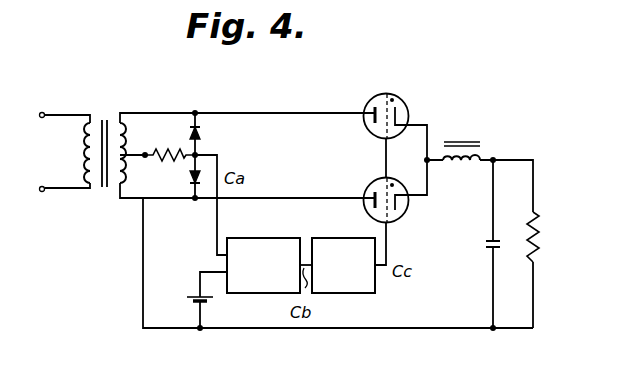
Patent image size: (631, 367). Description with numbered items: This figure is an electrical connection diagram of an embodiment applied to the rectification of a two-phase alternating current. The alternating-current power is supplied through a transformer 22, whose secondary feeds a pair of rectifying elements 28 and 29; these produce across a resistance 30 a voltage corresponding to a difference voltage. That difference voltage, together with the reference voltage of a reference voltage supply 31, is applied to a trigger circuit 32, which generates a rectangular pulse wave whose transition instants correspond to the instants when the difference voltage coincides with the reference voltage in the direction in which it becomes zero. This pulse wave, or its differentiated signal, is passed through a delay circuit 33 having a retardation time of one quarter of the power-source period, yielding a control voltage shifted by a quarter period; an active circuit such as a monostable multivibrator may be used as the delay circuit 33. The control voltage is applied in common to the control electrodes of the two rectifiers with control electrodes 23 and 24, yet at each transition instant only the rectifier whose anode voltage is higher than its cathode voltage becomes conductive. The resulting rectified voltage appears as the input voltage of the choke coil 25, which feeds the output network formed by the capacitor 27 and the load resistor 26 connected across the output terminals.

The transformer 22 is at (103, 120).
The rectifier with control electrode 23 is at (367, 102).
The rectifier with control electrode 24 is at (398, 218).
The choke coil 25 is at (461, 142).
The load resistor 26 is at (536, 240).
The capacitor 27 is at (482, 245).
The rectifying element 28 is at (199, 133).
The rectifying element 29 is at (190, 178).
The resistance 30 is at (165, 153).
The reference voltage supply 31 is at (189, 296).
The trigger circuit 32 is at (264, 238).
The delay circuit 33 is at (339, 238).